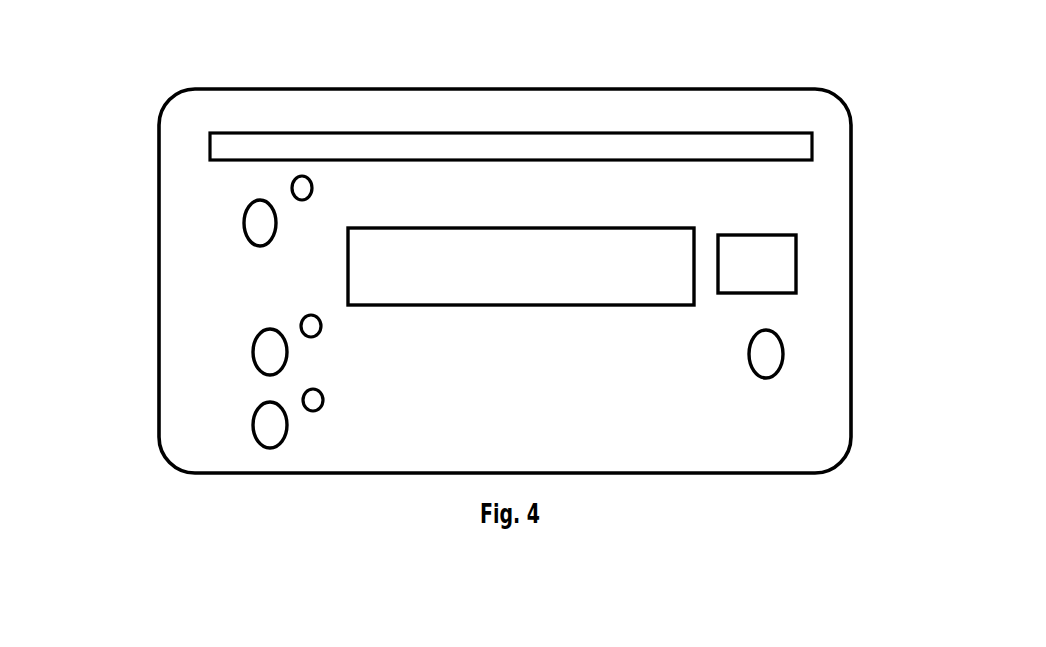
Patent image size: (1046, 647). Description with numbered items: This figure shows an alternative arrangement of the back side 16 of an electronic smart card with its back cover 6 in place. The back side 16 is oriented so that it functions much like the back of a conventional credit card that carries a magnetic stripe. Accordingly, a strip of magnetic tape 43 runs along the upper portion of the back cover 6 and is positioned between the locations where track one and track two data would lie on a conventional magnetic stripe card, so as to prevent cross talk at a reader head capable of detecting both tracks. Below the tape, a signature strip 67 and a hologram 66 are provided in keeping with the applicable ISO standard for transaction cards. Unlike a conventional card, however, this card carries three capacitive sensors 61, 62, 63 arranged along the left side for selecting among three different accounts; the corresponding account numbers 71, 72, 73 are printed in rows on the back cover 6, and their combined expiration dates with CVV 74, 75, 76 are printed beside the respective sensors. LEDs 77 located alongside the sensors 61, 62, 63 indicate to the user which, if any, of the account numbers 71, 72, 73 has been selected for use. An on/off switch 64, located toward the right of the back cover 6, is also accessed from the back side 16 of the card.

The back cover 6 is at (805, 193).
The back side 16 is at (595, 86).
The strip of magnetic tape 43 is at (503, 150).
The capacitive sensor 61 is at (248, 208).
The capacitive sensor 62 is at (255, 377).
The capacitive sensor 63 is at (277, 450).
The on/off switch 64 is at (768, 353).
The hologram 66 is at (778, 258).
The signature strip 67 is at (679, 283).
The account number 71 is at (670, 197).
The account number 72 is at (595, 335).
The account number 73 is at (692, 418).
The expiration date with CVV 74 is at (178, 223).
The expiration date with CVV 75 is at (183, 347).
The expiration date with CVV 76 is at (185, 418).
The LEDs 77 is at (304, 177).